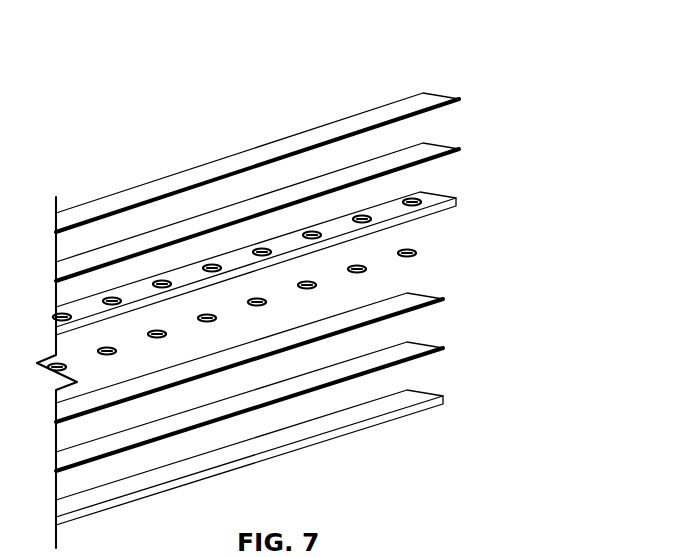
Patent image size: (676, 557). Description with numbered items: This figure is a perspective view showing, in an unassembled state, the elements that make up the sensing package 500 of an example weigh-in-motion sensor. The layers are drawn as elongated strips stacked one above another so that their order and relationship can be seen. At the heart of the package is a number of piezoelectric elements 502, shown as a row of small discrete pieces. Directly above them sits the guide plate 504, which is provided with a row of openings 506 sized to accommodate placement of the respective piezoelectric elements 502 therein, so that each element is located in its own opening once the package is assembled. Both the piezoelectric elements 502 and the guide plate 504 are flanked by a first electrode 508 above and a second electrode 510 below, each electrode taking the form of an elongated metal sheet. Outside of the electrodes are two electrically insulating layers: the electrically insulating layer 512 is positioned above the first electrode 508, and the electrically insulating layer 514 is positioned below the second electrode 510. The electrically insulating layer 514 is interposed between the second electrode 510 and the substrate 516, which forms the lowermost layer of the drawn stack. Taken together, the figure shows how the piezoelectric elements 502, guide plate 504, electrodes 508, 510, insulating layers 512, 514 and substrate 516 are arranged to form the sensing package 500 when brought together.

The sensing package 500 is at (510, 61).
The piezoelectric elements 502 is at (360, 266).
The guide plate 504 is at (445, 196).
The openings 506 is at (365, 215).
The first electrode 508 is at (418, 150).
The second electrode 510 is at (408, 300).
The electrically insulating layer 512 is at (395, 108).
The electrically insulating layer 514 is at (405, 350).
The substrate 516 is at (400, 402).